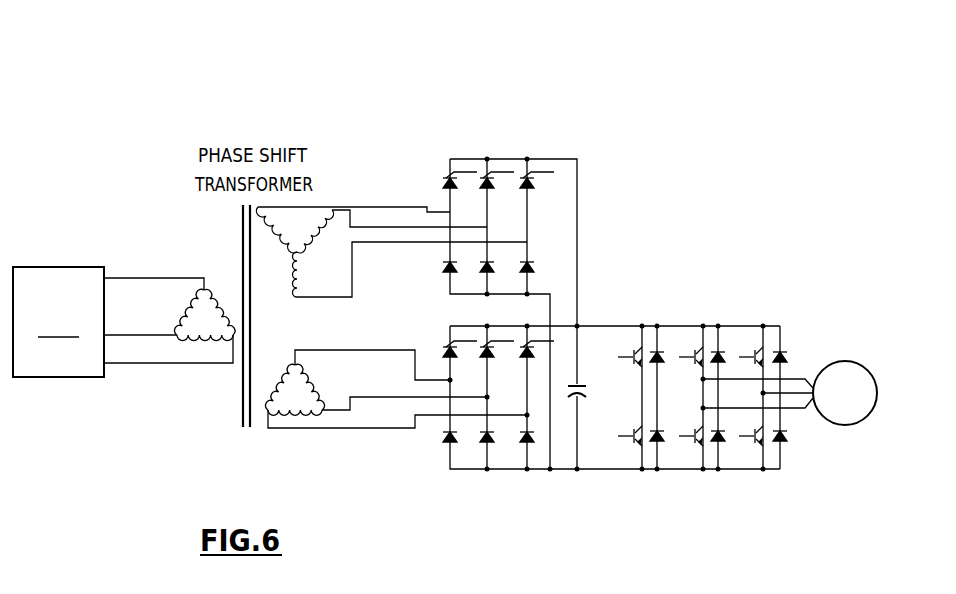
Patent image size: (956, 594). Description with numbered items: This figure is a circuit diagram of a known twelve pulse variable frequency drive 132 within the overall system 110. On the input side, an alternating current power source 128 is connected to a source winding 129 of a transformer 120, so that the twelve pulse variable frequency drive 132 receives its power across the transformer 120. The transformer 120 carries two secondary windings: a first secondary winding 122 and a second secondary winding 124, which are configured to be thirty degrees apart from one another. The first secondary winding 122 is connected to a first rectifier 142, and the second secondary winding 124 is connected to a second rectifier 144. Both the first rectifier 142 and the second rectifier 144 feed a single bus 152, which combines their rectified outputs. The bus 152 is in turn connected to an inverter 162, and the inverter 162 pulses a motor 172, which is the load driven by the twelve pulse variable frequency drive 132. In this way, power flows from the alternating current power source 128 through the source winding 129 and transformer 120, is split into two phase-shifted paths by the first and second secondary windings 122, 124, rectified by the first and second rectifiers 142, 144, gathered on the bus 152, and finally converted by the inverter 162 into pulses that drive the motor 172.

The power system 110 is at (155, 110).
The transformer 120 is at (226, 422).
The first secondary winding 122 is at (313, 228).
The second secondary winding 124 is at (319, 411).
The alternating current power source 128 is at (123, 318).
The source winding 129 is at (205, 290).
The twelve pulse variable frequency drive 132 is at (718, 173).
The first rectifier 142 is at (527, 159).
The second rectifier 144 is at (505, 470).
The bus 152 is at (578, 354).
The inverter 162 is at (680, 470).
The motor 172 is at (860, 365).